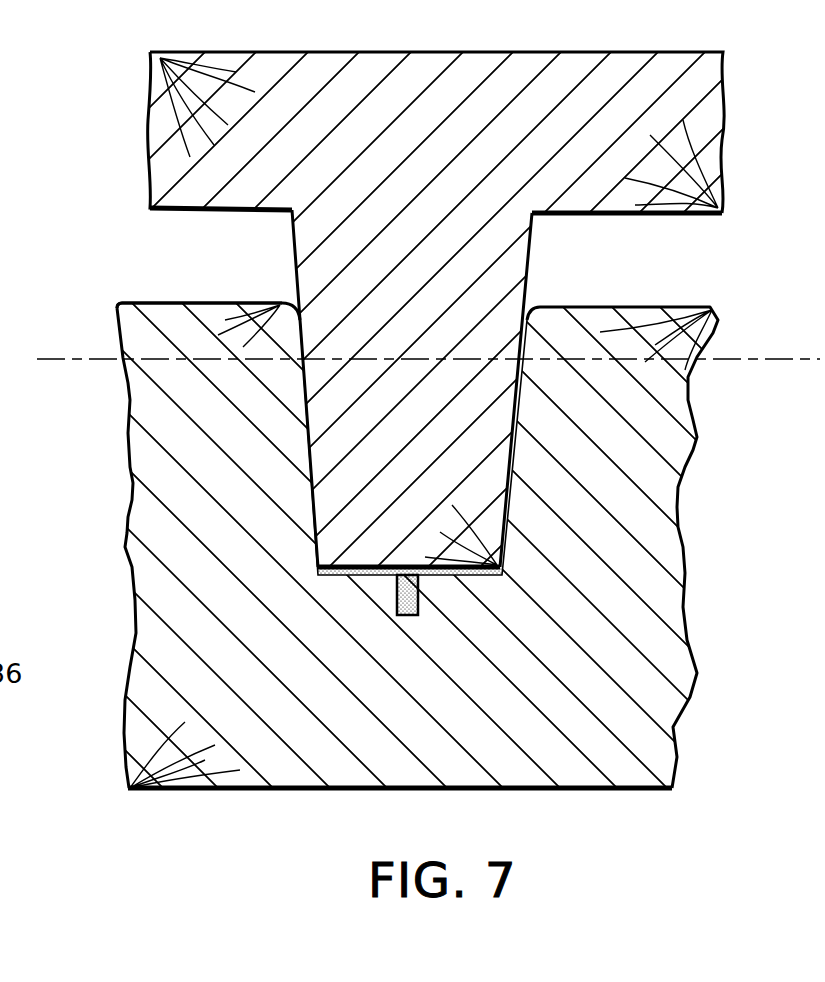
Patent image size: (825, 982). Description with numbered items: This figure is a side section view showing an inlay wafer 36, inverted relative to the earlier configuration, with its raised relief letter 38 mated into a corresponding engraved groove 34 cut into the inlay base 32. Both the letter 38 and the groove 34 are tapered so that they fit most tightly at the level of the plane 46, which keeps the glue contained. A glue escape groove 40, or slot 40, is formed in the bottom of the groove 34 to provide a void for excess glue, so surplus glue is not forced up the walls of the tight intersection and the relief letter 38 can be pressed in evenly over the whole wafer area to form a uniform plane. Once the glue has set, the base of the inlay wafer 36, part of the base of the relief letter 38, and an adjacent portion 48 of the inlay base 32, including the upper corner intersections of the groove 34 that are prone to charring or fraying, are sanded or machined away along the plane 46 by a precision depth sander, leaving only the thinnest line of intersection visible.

The inlay base 32 is at (694, 641).
The engraved groove 34 is at (316, 493).
The inlay wafer 36 is at (726, 118).
The relief letter 38 is at (292, 262).
The glue escape groove 40 is at (398, 590).
The plane 46 is at (110, 366).
The adjacent portion 48 is at (113, 331).